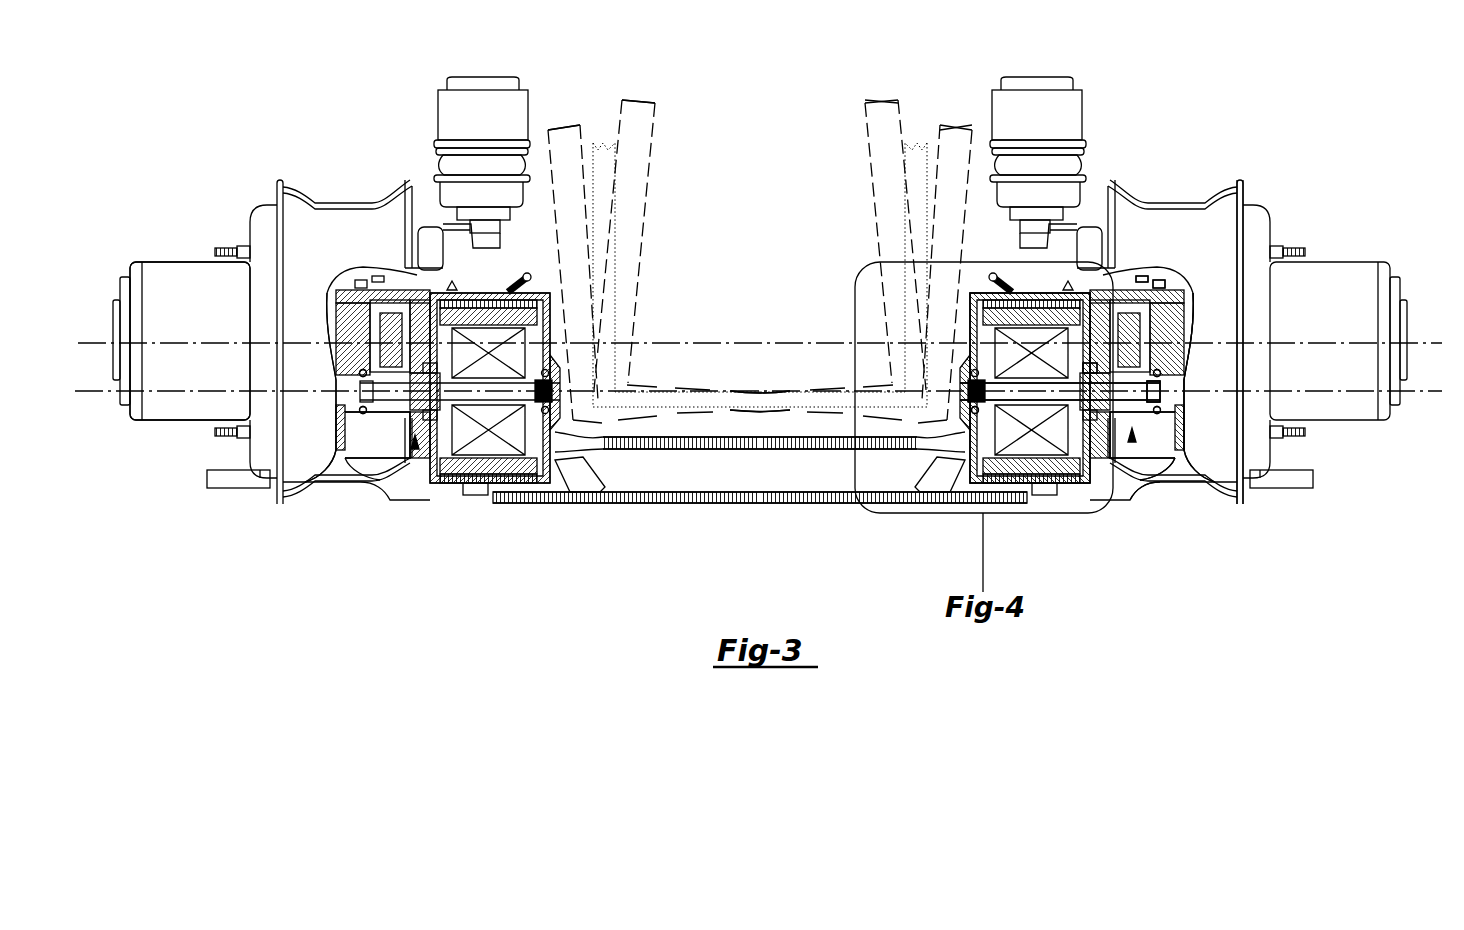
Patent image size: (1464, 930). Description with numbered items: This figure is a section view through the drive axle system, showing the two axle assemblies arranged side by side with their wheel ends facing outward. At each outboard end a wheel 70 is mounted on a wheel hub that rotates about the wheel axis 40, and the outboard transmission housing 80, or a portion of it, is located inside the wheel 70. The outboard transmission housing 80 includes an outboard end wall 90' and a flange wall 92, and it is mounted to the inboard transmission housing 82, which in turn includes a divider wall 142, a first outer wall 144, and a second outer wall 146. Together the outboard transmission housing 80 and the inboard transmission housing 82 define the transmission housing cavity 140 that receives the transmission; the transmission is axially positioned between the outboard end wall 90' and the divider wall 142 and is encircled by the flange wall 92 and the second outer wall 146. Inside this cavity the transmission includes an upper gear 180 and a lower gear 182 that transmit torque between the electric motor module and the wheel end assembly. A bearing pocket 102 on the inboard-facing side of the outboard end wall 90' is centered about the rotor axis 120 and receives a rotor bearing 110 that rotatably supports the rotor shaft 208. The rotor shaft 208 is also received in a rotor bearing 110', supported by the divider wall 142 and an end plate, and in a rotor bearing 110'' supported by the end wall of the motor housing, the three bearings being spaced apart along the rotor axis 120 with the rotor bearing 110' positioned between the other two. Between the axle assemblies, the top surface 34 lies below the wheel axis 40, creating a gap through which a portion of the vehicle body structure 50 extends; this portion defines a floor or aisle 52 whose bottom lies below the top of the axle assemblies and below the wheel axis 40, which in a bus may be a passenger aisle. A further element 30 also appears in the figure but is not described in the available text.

The axle beam 30 is at (687, 504).
The top surface 34 is at (660, 432).
The wheel axis 40 is at (101, 338).
The vehicle body structure 50 is at (758, 392).
The floor or aisle 52 is at (798, 301).
The wheel 70 is at (1233, 182).
The outboard transmission housing 80 is at (358, 452).
The inboard transmission housing 82 is at (472, 496).
The knuckle spindle portion 90' is at (1203, 372).
The flange wall 92 is at (1150, 460).
The bearing pocket 102 is at (1162, 397).
The rotor bearing 110 is at (1193, 402).
The rotor bearing 110' is at (1058, 361).
The rotor bearing 110'' is at (1014, 419).
The rotor axis 120 is at (97, 393).
The transmission housing cavity 140 is at (415, 449).
The divider wall 142 is at (1127, 281).
The first outer wall 144 is at (1030, 434).
The second outer wall 146 is at (1128, 454).
The upper gear 180 is at (1173, 301).
The lower gear 182 is at (392, 445).
The rotor shaft 208 is at (1050, 402).